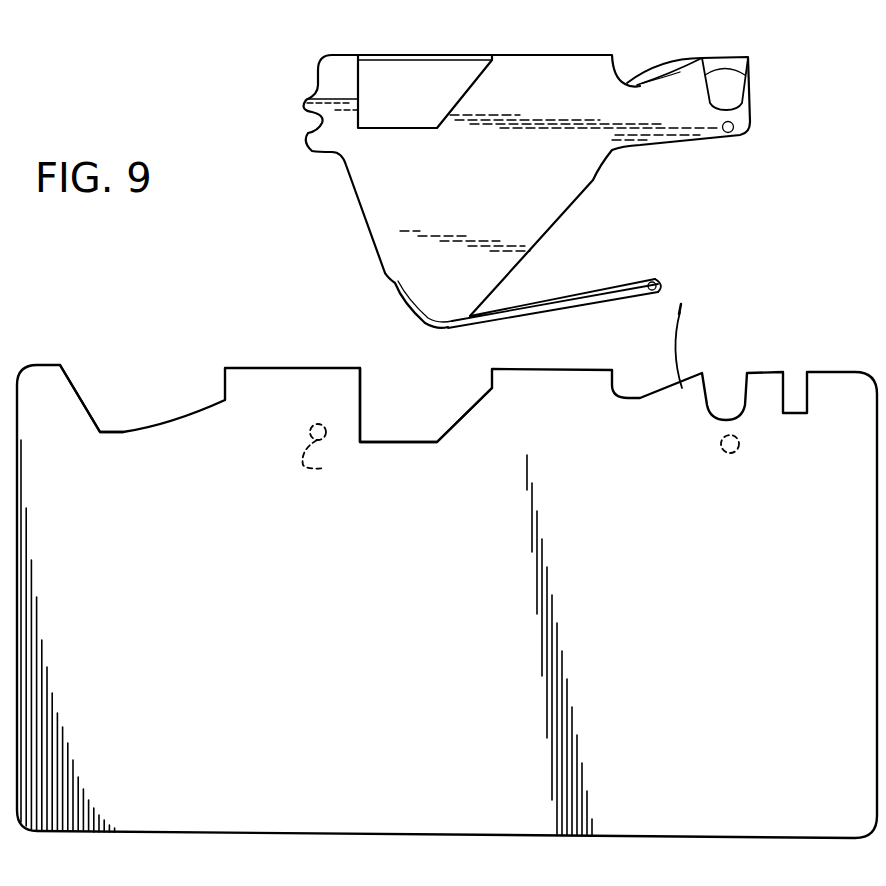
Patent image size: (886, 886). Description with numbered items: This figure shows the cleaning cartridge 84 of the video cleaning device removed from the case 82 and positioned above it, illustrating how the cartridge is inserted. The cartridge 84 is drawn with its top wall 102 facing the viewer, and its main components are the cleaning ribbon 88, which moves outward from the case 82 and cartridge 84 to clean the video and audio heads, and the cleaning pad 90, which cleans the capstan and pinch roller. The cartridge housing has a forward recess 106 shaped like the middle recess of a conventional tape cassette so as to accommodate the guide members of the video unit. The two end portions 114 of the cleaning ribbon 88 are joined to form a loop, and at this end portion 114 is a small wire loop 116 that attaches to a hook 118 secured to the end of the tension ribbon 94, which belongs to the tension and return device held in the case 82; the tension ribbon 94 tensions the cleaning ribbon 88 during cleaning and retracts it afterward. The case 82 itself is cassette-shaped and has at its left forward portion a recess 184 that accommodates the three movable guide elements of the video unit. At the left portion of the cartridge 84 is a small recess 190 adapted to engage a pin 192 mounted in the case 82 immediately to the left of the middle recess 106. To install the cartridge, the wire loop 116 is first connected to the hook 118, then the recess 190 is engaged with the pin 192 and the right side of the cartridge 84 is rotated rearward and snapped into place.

The case 82 is at (268, 818).
The cleaning cartridge 84 is at (537, 70).
The cleaning ribbon 88 is at (405, 53).
The cleaning pad 90 is at (662, 68).
The tension ribbon 94 is at (680, 356).
The top wall 102 is at (480, 201).
The forward recess 106 is at (363, 380).
The end portions of the cleaning ribbon 114 is at (598, 302).
The wire loop 116 is at (664, 283).
The hook 118 is at (684, 308).
The recess 184 is at (75, 382).
The small recess 190 is at (306, 128).
The pin 192 is at (325, 468).